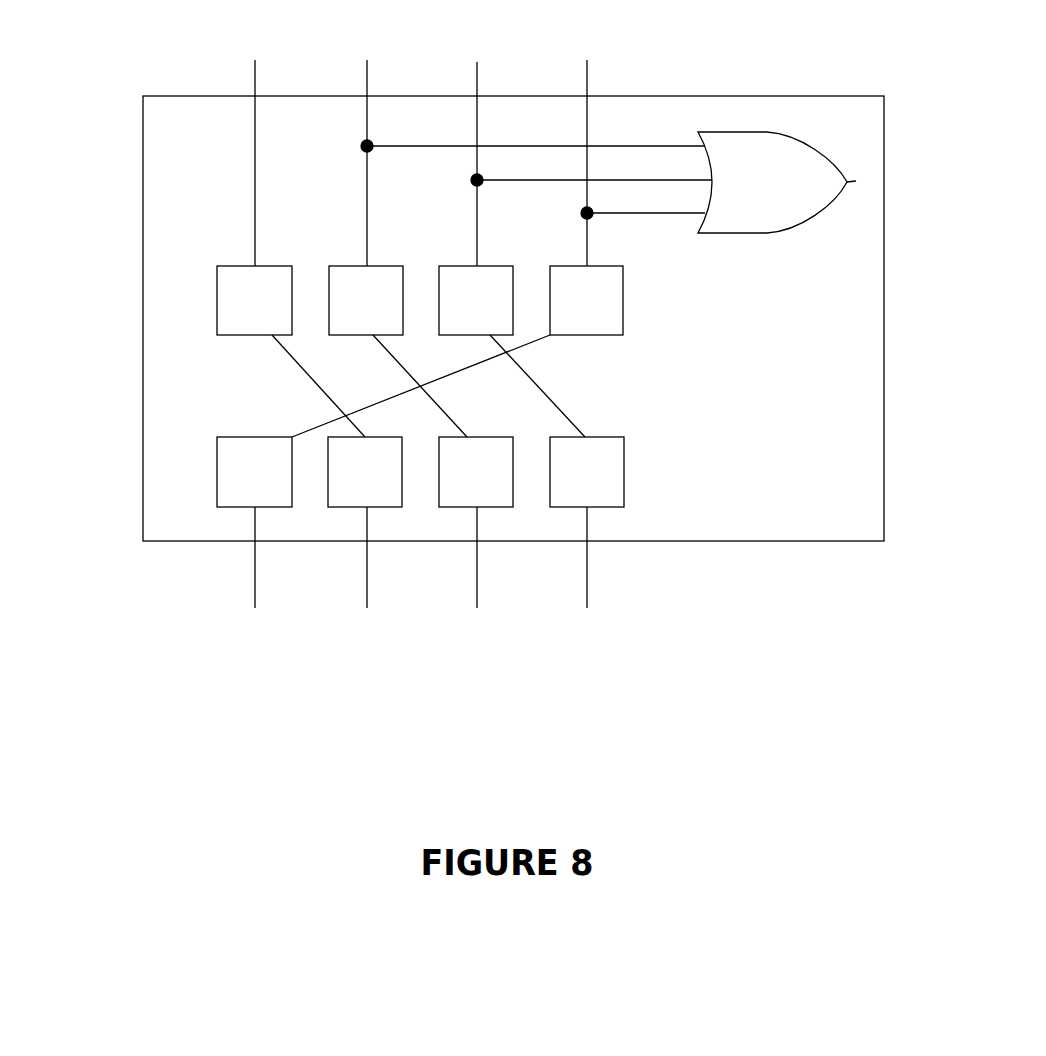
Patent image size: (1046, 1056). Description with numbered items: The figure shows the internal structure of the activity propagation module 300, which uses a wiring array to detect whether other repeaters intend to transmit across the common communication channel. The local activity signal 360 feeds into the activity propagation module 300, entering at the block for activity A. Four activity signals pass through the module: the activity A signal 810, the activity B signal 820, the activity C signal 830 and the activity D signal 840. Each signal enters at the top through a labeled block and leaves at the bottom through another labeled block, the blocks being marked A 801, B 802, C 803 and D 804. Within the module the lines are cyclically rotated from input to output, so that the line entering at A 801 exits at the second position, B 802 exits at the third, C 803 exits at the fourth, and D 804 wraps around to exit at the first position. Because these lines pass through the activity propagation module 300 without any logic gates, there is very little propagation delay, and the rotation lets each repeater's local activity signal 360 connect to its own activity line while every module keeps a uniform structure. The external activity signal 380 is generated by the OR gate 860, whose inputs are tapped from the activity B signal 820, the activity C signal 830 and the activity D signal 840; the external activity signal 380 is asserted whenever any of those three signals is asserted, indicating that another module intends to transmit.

The activity propagation module 300 is at (750, 541).
The local activity signal 360 is at (217, 298).
The external activity signal 380 is at (848, 183).
The activity A line terminal 801 is at (309, 386).
The activity B line terminal 802 is at (421, 386).
The activity C line terminal 803 is at (531, 386).
The activity D line terminal 804 is at (420, 386).
The activity A signal 810 is at (308, 341).
The activity B signal 820 is at (512, 336).
The activity C signal 830 is at (570, 336).
The activity D signal 840 is at (448, 336).
The OR gate 860 is at (772, 182).